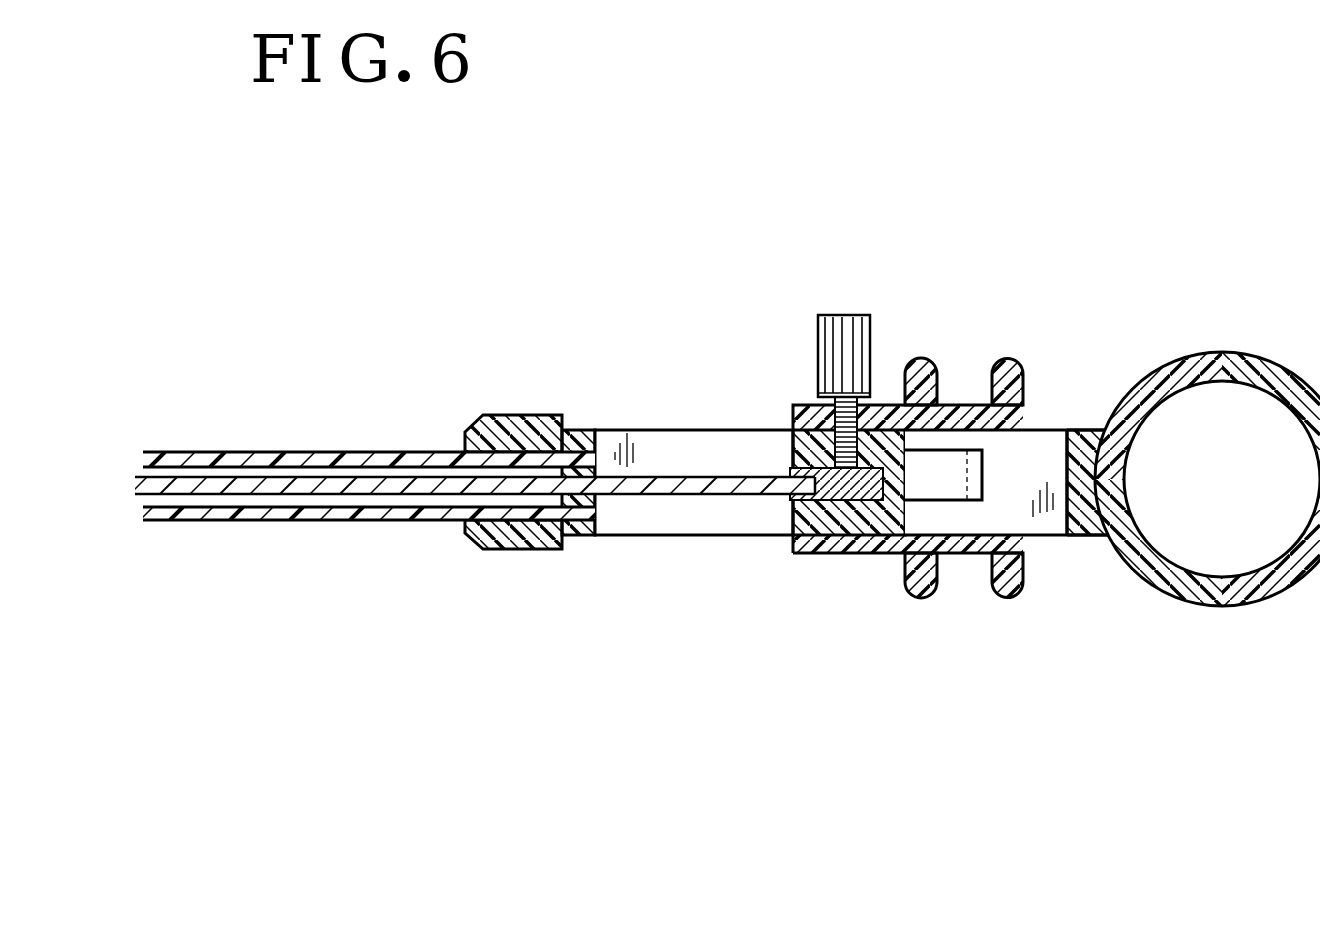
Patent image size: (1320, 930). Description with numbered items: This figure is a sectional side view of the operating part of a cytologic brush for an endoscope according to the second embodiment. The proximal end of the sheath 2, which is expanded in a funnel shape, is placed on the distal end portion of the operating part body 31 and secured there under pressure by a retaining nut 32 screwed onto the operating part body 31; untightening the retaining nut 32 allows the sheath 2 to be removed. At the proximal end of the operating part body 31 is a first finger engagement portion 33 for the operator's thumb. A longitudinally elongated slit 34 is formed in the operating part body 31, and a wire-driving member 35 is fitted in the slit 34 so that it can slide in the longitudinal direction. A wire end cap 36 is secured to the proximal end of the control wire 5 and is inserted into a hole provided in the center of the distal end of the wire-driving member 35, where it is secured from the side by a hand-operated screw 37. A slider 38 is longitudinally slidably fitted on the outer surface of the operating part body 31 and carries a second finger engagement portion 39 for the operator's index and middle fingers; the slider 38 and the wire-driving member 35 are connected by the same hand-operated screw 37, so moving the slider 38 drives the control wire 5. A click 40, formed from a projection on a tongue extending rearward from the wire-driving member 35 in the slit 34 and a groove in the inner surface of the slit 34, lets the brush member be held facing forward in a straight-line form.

The sheath 2 is at (268, 452).
The control wire 5 is at (361, 490).
The operating part body 31 is at (588, 537).
The retaining nut 32 is at (490, 550).
The first finger engagement portion 33 is at (1208, 592).
The slit 34 is at (655, 433).
The wire-driving member 35 is at (881, 515).
The wire end cap 36 is at (798, 553).
The hand-operated screw 37 is at (827, 358).
The slider 38 is at (867, 555).
The second finger engagement portion 39 is at (960, 587).
The click 40 is at (967, 450).